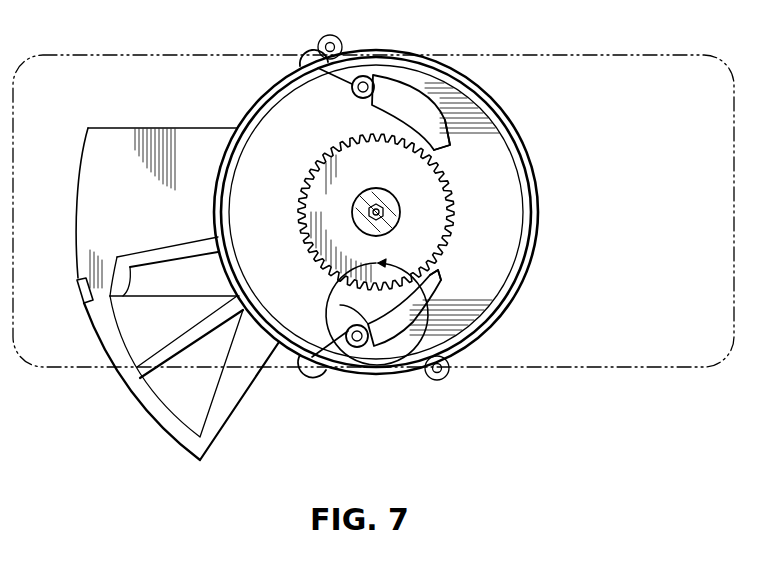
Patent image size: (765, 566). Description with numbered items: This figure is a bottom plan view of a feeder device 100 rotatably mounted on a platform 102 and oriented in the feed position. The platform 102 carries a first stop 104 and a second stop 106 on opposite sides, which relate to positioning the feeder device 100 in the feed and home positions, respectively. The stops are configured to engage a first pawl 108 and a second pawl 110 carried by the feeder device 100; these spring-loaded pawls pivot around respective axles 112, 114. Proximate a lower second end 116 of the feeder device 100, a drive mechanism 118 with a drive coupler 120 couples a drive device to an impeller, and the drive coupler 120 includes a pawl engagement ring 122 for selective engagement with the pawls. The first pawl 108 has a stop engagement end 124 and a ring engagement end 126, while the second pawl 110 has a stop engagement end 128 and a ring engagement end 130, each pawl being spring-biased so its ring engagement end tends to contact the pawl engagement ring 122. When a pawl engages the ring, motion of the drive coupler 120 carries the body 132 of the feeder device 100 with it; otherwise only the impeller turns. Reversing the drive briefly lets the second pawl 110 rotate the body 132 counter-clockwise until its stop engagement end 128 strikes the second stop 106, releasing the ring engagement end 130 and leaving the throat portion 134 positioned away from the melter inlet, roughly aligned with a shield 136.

The feeder device 100 is at (411, 212).
The platform 102 is at (96, 56).
The first stop 104 is at (330, 41).
The second stop 106 is at (437, 381).
The first pawl 108 is at (393, 117).
The second pawl 110 is at (403, 306).
The axle 112 is at (374, 113).
The axle 114 is at (360, 330).
The lower second end 116 is at (289, 278).
The drive mechanism 118 is at (541, 306).
The drive coupler 120 is at (460, 213).
The pawl engagement ring 122 is at (318, 162).
The stop engagement end 124 is at (308, 60).
The ring engagement end 126 is at (440, 148).
The stop engagement end 128 is at (313, 372).
The ring engagement end 130 is at (440, 275).
The body 132 is at (539, 208).
The throat portion 134 is at (140, 126).
The shield 136 is at (80, 298).